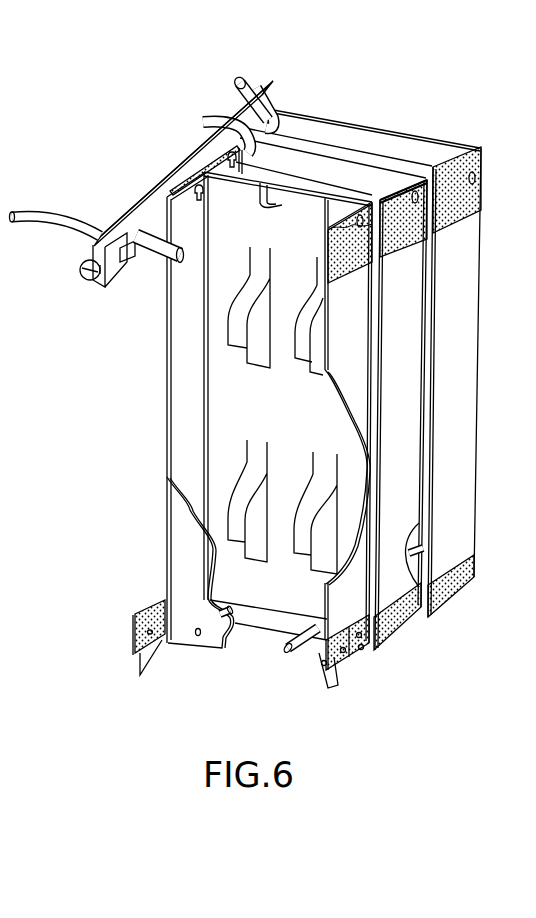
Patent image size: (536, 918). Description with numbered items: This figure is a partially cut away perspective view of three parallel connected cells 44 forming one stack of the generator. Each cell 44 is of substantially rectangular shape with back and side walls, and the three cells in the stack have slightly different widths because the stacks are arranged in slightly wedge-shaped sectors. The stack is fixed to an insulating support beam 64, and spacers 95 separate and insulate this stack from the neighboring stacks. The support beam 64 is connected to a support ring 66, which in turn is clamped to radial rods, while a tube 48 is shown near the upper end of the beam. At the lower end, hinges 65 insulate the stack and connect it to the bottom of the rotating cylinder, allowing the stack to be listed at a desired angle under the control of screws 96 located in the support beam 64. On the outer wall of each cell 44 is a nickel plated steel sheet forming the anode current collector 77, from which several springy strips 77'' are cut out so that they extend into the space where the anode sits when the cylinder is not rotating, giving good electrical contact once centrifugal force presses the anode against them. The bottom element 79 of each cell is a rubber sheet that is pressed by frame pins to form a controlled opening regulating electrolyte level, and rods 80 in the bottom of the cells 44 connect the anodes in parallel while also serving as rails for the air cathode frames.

The cell 44 is at (442, 150).
The tube 48 is at (239, 81).
The insulating support beam 64 is at (235, 118).
The hinge 65 is at (325, 670).
The support ring 66 is at (98, 227).
The anode current collector 77 is at (358, 147).
The louver cutouts 77'' is at (282, 410).
The bottom element 79 is at (252, 633).
The rod 80 is at (288, 652).
The spacer 95 is at (275, 100).
The screw 96 is at (85, 281).